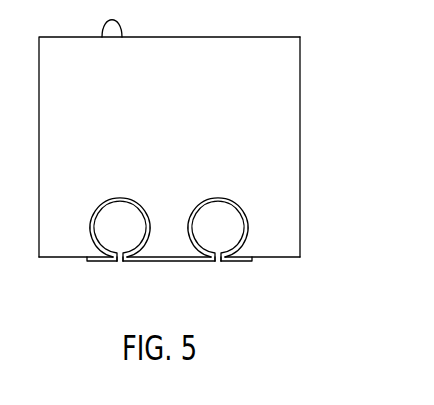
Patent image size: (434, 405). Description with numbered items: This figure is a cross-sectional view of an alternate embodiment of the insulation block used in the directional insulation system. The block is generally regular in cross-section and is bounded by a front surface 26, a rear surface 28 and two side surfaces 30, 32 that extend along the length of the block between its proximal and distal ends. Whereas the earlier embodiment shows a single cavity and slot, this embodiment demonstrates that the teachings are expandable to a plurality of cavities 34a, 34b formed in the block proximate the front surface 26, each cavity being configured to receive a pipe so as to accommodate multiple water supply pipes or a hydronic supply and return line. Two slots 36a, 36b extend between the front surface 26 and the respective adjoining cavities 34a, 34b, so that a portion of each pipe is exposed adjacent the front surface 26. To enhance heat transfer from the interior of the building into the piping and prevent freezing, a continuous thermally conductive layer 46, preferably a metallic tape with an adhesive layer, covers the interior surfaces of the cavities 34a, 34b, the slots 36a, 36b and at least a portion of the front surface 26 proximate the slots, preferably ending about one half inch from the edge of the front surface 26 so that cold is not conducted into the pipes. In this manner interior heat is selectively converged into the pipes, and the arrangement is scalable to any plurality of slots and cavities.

The front surface 26 is at (56, 256).
The rear surface 28 is at (101, 37).
The side surface 30 is at (39, 132).
The side surface 32 is at (301, 157).
The cavity 34a is at (147, 214).
The cavity 34b is at (245, 214).
The slot 36a is at (121, 262).
The slot 36b is at (219, 262).
The thermally conductive layer 46 is at (105, 261).